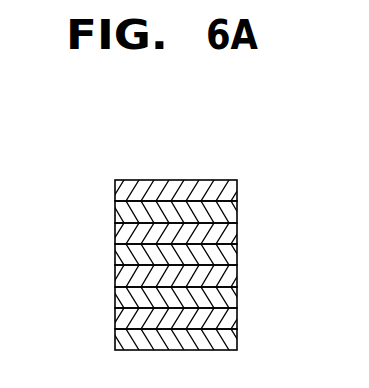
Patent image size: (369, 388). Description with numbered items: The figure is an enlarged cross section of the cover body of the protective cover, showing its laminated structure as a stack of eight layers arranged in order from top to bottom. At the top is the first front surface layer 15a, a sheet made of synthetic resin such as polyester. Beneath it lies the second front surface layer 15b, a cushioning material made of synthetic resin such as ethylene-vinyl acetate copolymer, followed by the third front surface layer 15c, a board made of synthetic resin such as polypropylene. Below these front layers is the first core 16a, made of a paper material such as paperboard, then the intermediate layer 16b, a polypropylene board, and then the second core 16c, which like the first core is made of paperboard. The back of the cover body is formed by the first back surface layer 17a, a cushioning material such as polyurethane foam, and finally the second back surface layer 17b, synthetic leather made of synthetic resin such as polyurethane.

The first front surface layer 15a is at (115, 190).
The second front surface layer 15b is at (237, 209).
The third front surface layer 15c is at (115, 230).
The first core 16a is at (237, 250).
The intermediate layer 16b is at (115, 274).
The second core 16c is at (237, 294).
The first back surface layer 17a is at (115, 318).
The second back surface layer 17b is at (237, 335).